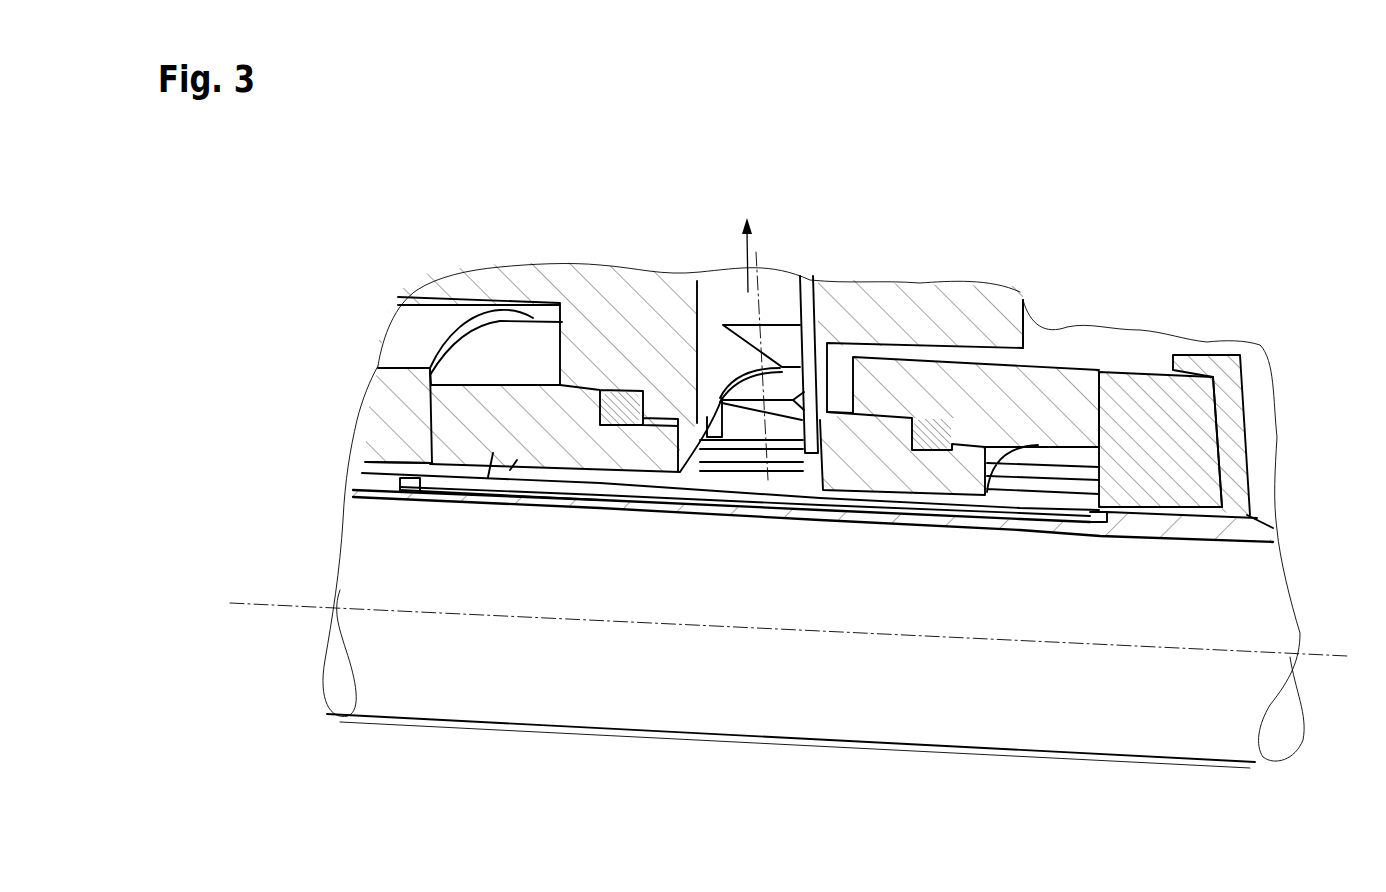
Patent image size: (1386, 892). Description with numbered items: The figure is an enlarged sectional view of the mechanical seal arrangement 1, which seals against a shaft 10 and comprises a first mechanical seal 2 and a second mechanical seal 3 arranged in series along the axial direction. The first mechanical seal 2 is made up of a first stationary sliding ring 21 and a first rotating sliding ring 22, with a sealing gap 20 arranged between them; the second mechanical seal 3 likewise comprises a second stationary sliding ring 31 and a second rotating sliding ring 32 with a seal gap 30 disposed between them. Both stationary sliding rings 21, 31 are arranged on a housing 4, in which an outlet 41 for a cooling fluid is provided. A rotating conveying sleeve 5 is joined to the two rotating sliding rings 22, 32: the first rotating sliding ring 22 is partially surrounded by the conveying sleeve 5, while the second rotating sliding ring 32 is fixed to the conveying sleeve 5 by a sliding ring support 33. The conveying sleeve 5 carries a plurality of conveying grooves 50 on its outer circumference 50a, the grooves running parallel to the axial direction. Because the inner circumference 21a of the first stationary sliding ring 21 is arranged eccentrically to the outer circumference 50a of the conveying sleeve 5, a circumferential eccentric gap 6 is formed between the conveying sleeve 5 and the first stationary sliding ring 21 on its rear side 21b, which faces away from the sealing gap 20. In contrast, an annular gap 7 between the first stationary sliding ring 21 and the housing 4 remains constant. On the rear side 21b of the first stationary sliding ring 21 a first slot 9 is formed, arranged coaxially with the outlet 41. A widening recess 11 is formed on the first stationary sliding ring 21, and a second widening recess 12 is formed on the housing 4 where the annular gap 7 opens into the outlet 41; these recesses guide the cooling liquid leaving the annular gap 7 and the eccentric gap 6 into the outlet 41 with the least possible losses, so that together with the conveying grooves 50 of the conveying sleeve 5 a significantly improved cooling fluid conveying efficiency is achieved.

The mechanical seal arrangement 1 is at (316, 166).
The first mechanical seal 2 is at (446, 289).
The second mechanical seal 3 is at (1118, 300).
The housing 4 is at (893, 303).
The conveying sleeve 5 is at (1262, 530).
The eccentric gap 6 is at (573, 477).
The annular gap 7 is at (665, 423).
The first slot 9 is at (685, 425).
The shaft 10 is at (1252, 577).
The widening recess 11 is at (760, 413).
The second widening recess 12 is at (780, 336).
The sealing gap 20 is at (407, 402).
The first stationary sliding ring 21 is at (522, 434).
The inner circumference 21a is at (513, 478).
The rear side 21b is at (832, 402).
The first rotating sliding ring 22 is at (393, 426).
The seal gap 30 is at (1097, 422).
The second stationary sliding ring 31 is at (1037, 397).
The second rotating sliding ring 32 is at (1193, 397).
The sliding ring support 33 is at (1233, 395).
The outlet 41 is at (775, 297).
The conveying grooves 50 is at (1037, 517).
The outer circumference 50a is at (465, 452).